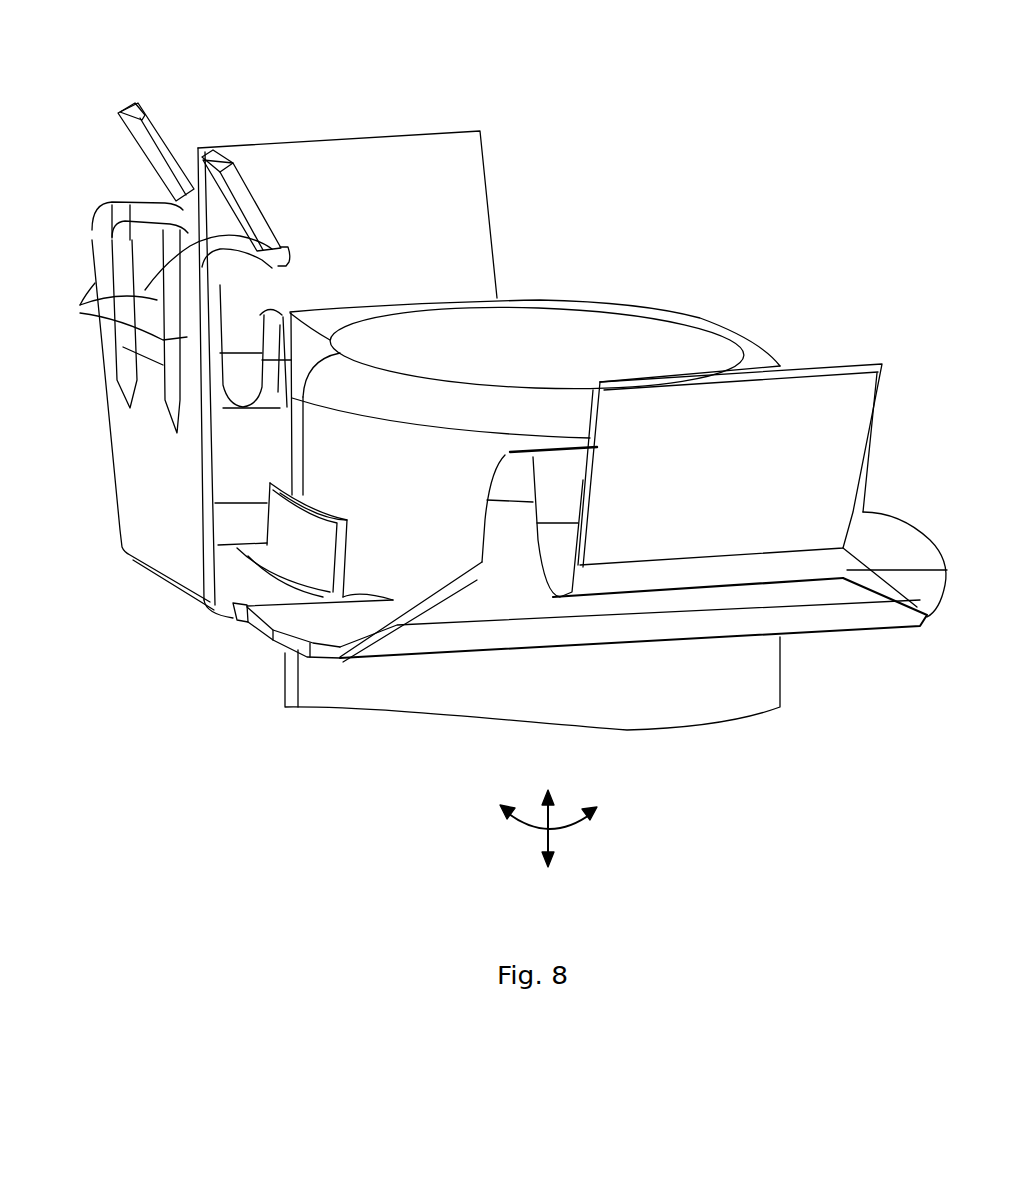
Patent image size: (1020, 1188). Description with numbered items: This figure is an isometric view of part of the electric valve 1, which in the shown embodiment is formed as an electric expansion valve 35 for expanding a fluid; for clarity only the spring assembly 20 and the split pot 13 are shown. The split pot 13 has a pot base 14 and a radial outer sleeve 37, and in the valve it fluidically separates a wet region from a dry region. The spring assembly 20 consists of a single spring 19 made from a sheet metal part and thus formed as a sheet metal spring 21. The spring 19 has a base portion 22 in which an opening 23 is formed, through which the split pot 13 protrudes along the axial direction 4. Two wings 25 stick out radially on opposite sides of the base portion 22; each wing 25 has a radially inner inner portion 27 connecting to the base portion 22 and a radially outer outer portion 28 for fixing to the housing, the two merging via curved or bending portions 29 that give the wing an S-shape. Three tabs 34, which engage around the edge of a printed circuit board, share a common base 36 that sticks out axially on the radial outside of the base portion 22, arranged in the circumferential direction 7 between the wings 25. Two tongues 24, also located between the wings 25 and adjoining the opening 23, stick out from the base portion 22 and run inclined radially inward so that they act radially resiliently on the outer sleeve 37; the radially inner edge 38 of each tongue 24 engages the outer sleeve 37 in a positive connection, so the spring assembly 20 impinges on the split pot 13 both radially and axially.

The electric valve 1 is at (793, 160).
The electric expansion valve 35 is at (502, 417).
The axial direction 4 is at (552, 842).
The circumferential direction 7 is at (518, 825).
The split pot 13 is at (673, 309).
The pot base 14 is at (597, 317).
The spring 19 is at (878, 628).
The spring assembly 20 is at (565, 654).
The sheet metal spring 21 is at (565, 654).
The base portion 22 is at (898, 557).
The opening 23 is at (347, 590).
The tongue 24 is at (314, 542).
The wing 25 is at (490, 180).
The inner portion 27 is at (250, 520).
The outer portion 28 is at (330, 172).
The curved portion 29 is at (280, 303).
The tab 34 is at (162, 301).
The base 36 is at (170, 485).
The outer sleeve 37 is at (444, 527).
The edge 38 is at (320, 515).